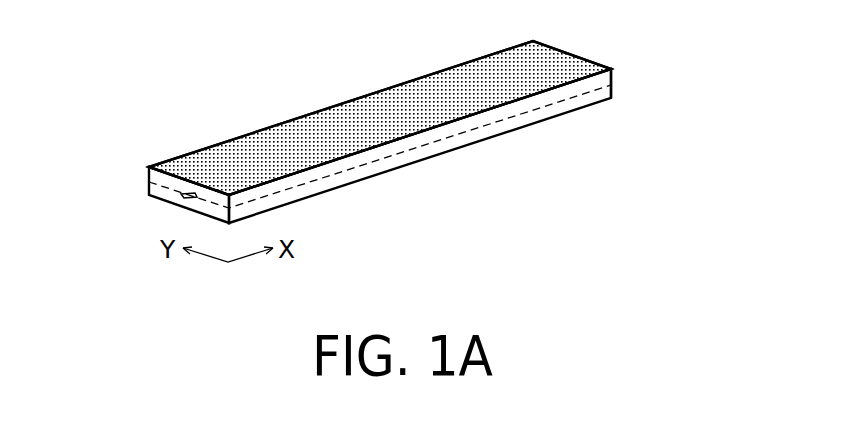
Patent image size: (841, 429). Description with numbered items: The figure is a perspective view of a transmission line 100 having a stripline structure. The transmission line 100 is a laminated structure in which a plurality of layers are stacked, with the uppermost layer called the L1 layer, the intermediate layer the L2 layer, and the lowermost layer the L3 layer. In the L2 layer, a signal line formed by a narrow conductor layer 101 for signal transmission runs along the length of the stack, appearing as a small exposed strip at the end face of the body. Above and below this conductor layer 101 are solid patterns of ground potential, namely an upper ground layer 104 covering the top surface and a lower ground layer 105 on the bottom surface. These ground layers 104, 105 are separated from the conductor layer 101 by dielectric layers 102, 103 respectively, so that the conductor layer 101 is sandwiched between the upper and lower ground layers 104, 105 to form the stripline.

The transmission line 100 is at (105, 286).
The conductor layer 101 is at (189, 197).
The dielectric layer 102 is at (612, 75).
The dielectric layer 103 is at (612, 88).
The ground layer 104 is at (366, 112).
The ground layer 105 is at (452, 151).